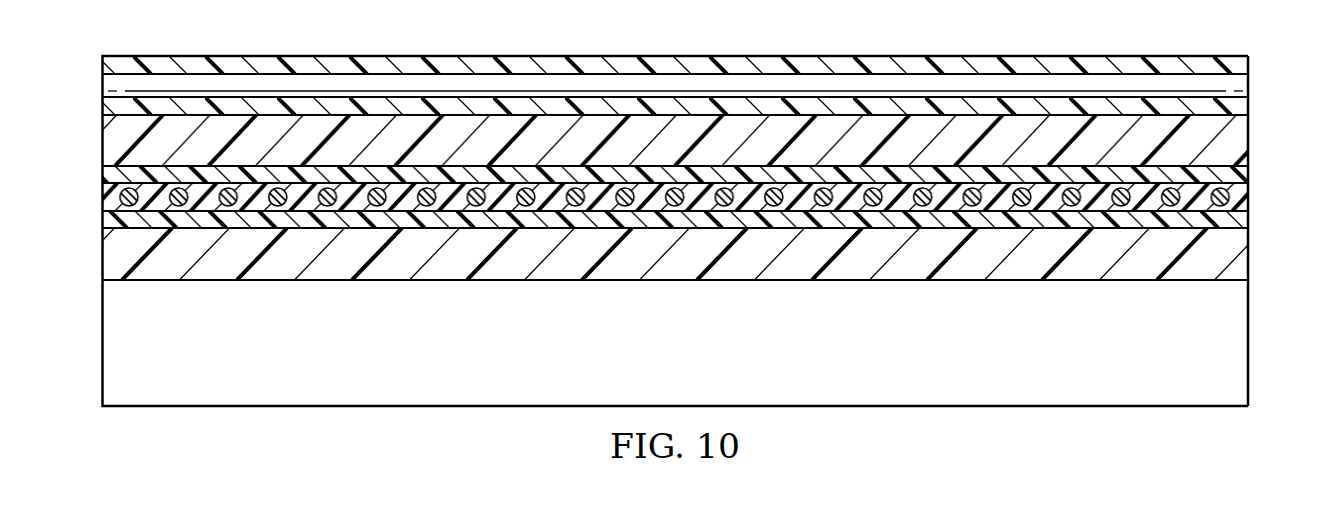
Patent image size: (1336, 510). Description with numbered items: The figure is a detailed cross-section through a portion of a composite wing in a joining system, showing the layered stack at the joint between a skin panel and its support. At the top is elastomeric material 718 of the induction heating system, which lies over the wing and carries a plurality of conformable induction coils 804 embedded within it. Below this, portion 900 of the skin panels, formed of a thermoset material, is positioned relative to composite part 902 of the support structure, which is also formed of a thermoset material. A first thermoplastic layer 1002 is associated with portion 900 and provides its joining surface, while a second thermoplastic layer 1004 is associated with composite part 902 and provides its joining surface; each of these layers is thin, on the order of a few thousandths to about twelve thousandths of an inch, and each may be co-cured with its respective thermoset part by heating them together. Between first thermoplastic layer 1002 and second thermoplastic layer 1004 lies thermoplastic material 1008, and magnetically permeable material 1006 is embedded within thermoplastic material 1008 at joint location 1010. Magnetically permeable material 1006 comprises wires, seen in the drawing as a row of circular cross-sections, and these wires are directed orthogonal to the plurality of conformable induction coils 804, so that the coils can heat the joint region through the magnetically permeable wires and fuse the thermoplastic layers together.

The elastomeric material 718 is at (480, 57).
The plurality of conformable induction coils 804 is at (817, 83).
The portion of skin panels 900 is at (102, 140).
The first thermoplastic layer 1002 is at (102, 172).
The magnetically permeable material 1006 is at (119, 197).
The second thermoplastic layer 1004 is at (102, 218).
The composite part 902 is at (102, 256).
The thermoplastic material 1008 is at (1248, 200).
The joint location 1010 is at (1283, 174).